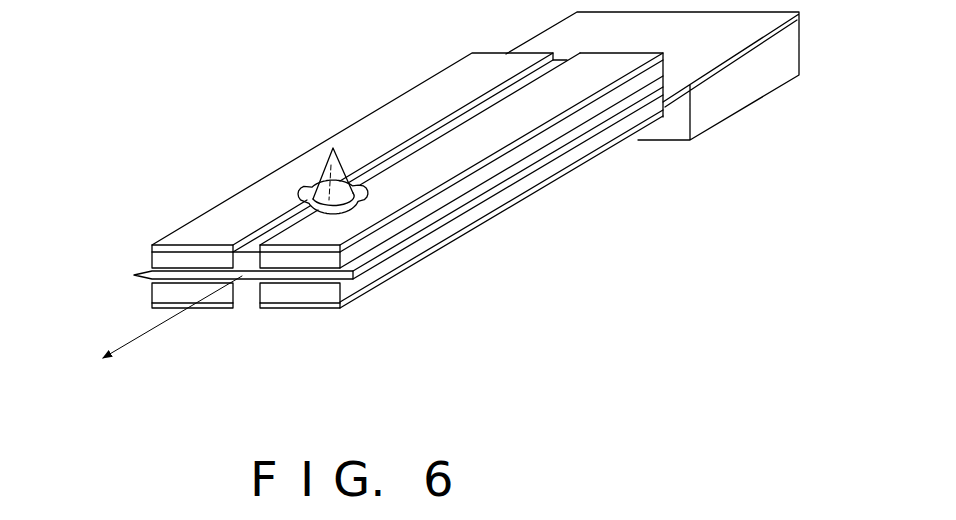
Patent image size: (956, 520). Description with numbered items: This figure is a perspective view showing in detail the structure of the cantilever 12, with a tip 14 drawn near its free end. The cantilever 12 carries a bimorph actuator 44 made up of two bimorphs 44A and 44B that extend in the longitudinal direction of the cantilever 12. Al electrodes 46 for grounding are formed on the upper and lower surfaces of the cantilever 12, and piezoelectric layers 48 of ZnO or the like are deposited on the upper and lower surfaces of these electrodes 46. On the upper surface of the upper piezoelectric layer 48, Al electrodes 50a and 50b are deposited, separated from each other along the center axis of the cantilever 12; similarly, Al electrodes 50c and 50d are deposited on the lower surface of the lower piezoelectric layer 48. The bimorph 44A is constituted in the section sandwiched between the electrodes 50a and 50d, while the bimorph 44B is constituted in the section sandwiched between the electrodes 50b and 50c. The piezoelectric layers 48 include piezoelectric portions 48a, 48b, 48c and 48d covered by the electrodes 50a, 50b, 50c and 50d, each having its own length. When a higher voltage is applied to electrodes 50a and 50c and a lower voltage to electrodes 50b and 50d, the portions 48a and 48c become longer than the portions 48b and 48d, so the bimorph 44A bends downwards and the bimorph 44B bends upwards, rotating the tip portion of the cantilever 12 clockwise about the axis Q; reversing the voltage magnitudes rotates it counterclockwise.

The cantilever 12 is at (597, 148).
The conical tip 14 is at (348, 178).
The bimorph actuator 44 is at (540, 250).
The bimorph 44A is at (553, 188).
The bimorph 44B is at (413, 88).
The Al electrodes for grounding 46 is at (137, 276).
The piezoelectric layers 48 is at (350, 253).
The piezoelectric portion 48a is at (288, 260).
The piezoelectric portion 48b is at (177, 260).
The piezoelectric portion 48c is at (216, 299).
The piezoelectric portion 48d is at (290, 299).
The Al electrode 50a is at (447, 173).
The Al electrode 50b is at (225, 199).
The Al electrode 50c is at (167, 306).
The Al electrode 50d is at (330, 307).
The axis Q is at (162, 329).